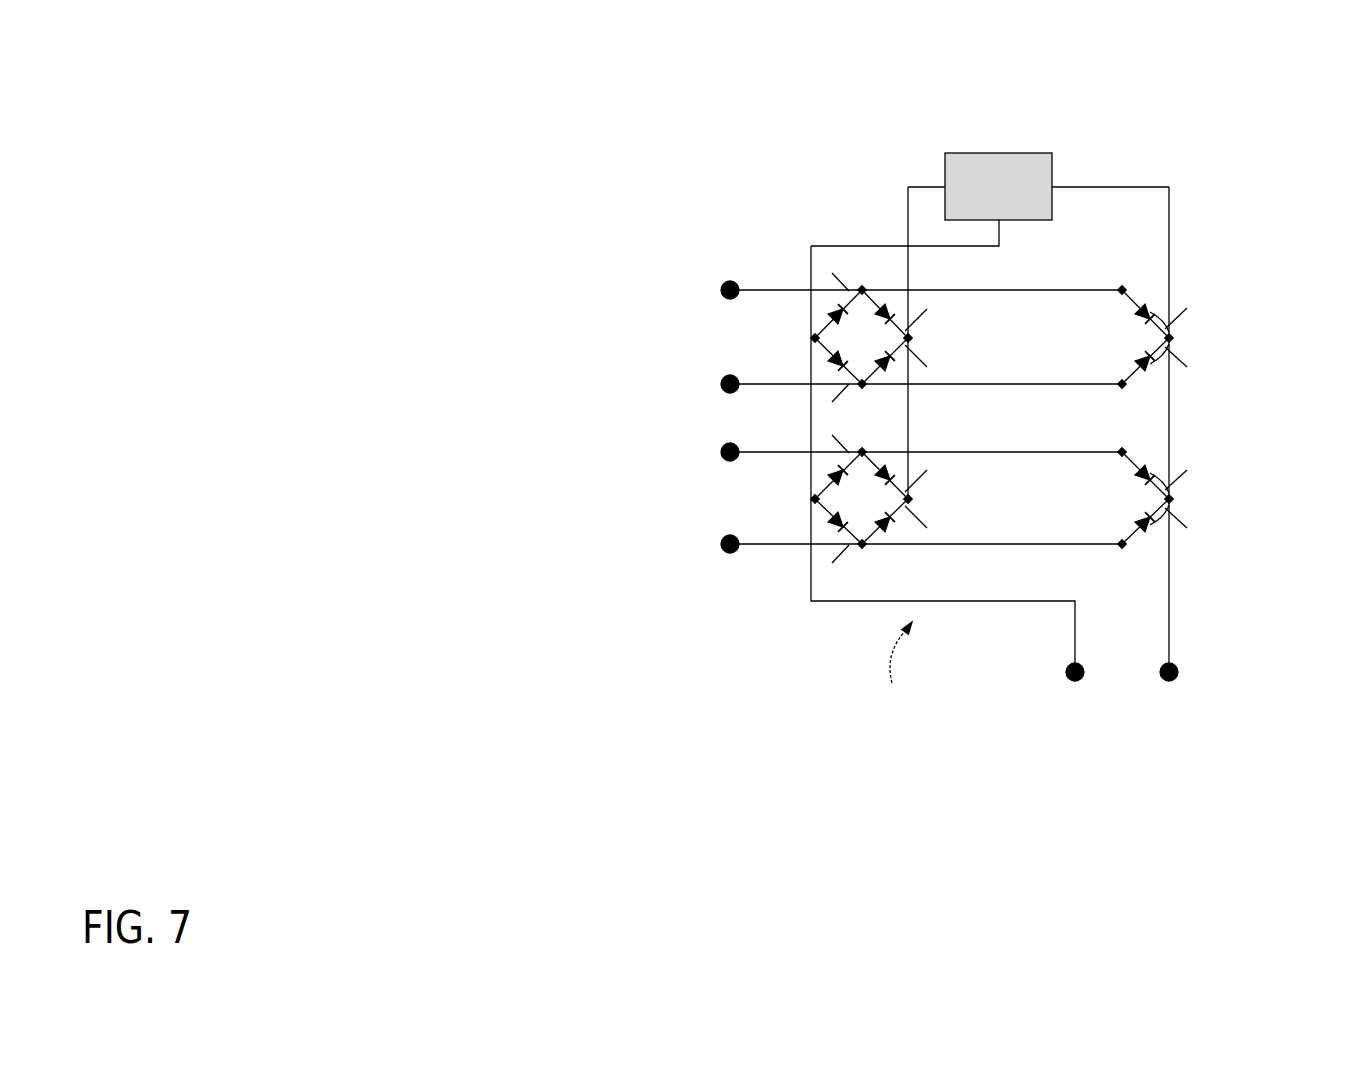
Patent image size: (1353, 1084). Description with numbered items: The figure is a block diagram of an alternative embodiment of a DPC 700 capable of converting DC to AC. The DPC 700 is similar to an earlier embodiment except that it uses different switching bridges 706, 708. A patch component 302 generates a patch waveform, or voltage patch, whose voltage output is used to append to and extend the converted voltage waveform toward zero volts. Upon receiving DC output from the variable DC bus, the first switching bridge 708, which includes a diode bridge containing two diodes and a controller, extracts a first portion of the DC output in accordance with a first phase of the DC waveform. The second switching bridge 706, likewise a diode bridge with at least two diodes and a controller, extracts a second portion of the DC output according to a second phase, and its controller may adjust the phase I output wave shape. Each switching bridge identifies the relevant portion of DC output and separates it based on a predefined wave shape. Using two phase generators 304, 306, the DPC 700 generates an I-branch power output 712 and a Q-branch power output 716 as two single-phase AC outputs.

The DPC 700 is at (1156, 102).
The patch component 302 is at (960, 152).
The phase generator 304 is at (869, 337).
The phase generator 306 is at (869, 499).
The second switching bridge 706 is at (1208, 331).
The first switching bridge 708 is at (1200, 503).
The I-branch power output 712 is at (515, 302).
The Q-branch power output 716 is at (520, 538).